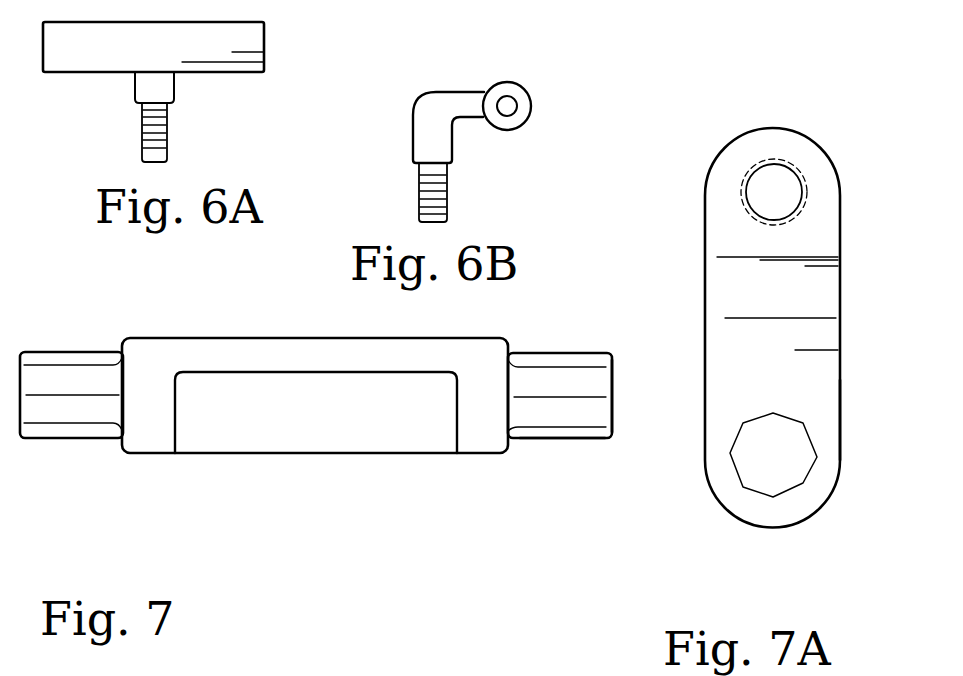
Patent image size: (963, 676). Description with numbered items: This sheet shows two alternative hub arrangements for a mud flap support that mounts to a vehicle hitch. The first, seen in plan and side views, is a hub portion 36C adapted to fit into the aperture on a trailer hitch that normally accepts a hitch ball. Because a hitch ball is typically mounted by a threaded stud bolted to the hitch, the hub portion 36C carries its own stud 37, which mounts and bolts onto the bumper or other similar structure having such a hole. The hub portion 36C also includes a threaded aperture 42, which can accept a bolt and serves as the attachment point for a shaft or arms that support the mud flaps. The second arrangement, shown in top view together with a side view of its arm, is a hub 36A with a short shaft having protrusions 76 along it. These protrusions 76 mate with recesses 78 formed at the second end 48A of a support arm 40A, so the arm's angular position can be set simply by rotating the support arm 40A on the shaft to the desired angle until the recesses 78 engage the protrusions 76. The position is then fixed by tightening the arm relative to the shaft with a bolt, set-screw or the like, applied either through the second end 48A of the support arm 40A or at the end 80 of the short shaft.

In FIG. 6A, the stud 37 is at (142, 147).
In FIG. 6B, the stud 37 is at (419, 204).
In FIG. 6B, the hub portion 36C is at (413, 112).
In FIG. 6B, the threaded aperture 42 is at (507, 100).
In FIG. 7, the hub 36A is at (318, 453).
In FIG. 7, the protrusions 76 is at (556, 396).
In FIG. 7, the end of the short shaft 80 is at (613, 413).
In FIG. 7A, the support arm 40A is at (705, 355).
In FIG. 7A, the second end of the support arm 48A is at (842, 432).
In FIG. 7A, the recesses 78 is at (733, 452).